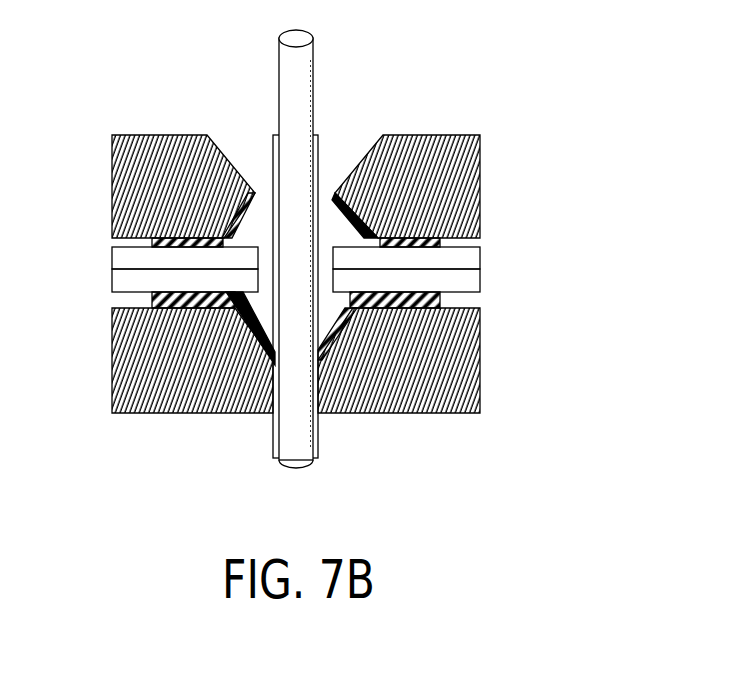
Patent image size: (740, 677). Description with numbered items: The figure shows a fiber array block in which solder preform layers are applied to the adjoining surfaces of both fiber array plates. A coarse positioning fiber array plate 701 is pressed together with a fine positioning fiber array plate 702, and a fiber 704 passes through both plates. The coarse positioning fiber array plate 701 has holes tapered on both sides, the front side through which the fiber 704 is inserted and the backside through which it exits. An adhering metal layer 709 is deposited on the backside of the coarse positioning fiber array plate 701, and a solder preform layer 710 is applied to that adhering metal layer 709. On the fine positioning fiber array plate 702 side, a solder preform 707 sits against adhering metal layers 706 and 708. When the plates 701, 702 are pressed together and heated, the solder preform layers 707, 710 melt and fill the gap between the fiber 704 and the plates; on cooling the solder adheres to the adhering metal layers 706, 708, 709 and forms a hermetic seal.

The coarse positioning fiber array plate 701 is at (112, 142).
The fine positioning fiber array plate 702 is at (483, 347).
The fiber 704 is at (313, 98).
The adhering metal layer 706 is at (442, 300).
The solder preform 707 is at (112, 287).
The adhering metal layer 708 is at (393, 497).
The adhering metal layer 709 is at (442, 242).
The solder preform layer 710 is at (112, 252).